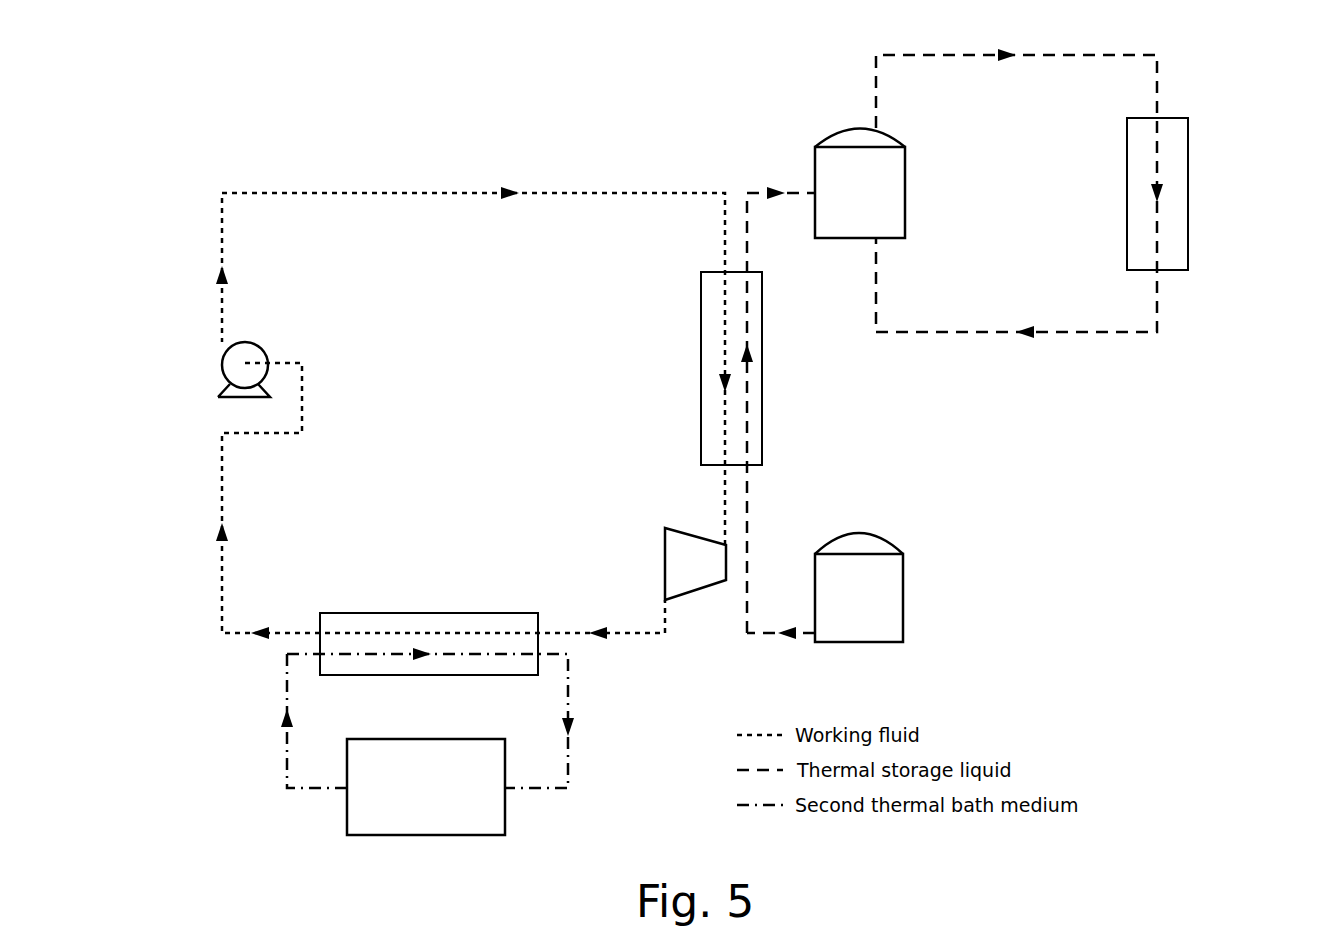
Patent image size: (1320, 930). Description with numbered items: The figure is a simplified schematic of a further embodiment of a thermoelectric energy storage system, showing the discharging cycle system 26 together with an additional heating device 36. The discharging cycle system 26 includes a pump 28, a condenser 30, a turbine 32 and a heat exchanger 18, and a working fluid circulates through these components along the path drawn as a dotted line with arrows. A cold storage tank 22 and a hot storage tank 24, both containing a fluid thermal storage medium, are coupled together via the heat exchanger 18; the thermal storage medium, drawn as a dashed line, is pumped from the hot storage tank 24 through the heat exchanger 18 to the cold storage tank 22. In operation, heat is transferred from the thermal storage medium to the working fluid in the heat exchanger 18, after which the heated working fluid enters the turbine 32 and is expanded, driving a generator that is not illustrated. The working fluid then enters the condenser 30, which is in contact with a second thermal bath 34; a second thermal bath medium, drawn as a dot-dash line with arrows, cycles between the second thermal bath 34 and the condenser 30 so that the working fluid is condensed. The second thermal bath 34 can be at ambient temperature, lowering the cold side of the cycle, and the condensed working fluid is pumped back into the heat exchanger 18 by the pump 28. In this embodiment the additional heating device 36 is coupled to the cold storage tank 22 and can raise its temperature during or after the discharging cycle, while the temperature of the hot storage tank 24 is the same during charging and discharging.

The heat exchanger 18 is at (701, 365).
The cold storage tank 22 is at (845, 240).
The hot storage tank 24 is at (905, 595).
The discharging cycle system 26 is at (486, 418).
The pump 28 is at (222, 368).
The condenser 30 is at (425, 613).
The turbine 32 is at (665, 565).
The second thermal bath 34 is at (505, 803).
The additional heating device 36 is at (1188, 192).